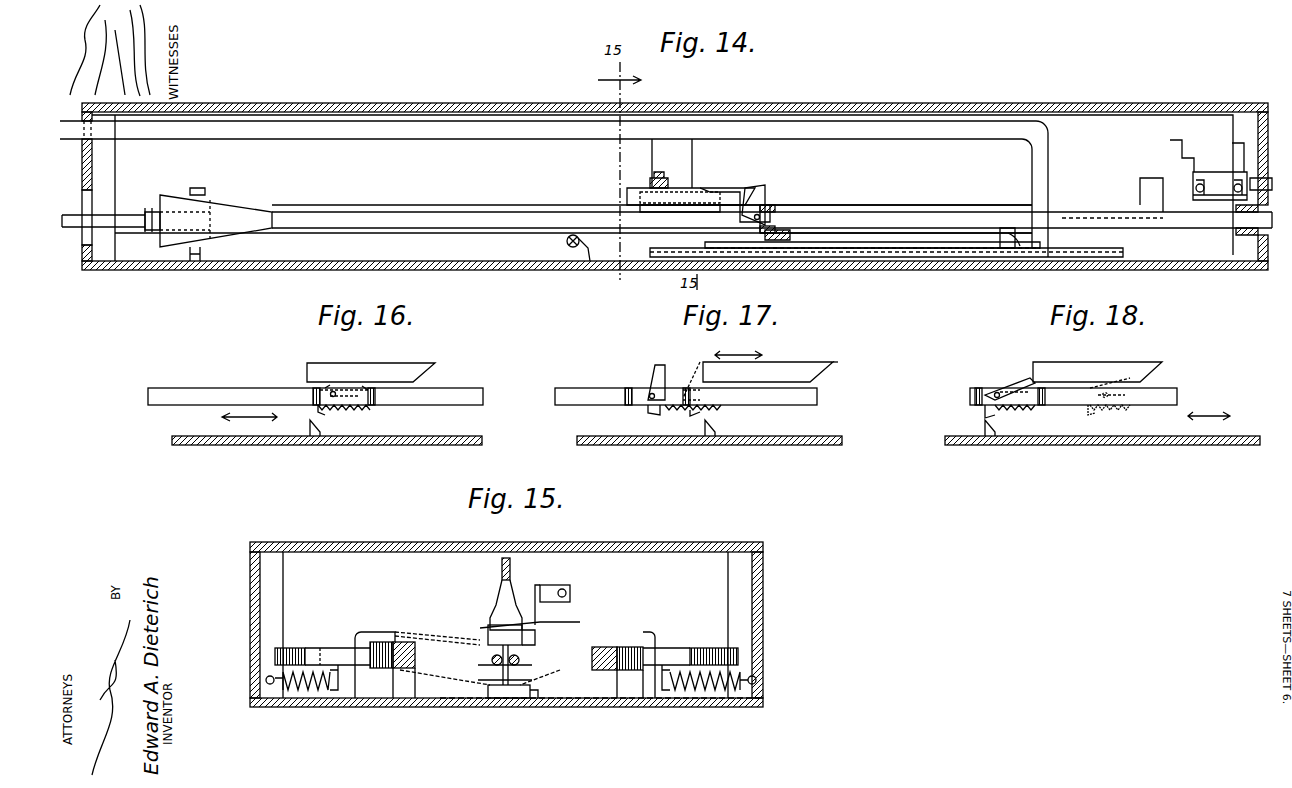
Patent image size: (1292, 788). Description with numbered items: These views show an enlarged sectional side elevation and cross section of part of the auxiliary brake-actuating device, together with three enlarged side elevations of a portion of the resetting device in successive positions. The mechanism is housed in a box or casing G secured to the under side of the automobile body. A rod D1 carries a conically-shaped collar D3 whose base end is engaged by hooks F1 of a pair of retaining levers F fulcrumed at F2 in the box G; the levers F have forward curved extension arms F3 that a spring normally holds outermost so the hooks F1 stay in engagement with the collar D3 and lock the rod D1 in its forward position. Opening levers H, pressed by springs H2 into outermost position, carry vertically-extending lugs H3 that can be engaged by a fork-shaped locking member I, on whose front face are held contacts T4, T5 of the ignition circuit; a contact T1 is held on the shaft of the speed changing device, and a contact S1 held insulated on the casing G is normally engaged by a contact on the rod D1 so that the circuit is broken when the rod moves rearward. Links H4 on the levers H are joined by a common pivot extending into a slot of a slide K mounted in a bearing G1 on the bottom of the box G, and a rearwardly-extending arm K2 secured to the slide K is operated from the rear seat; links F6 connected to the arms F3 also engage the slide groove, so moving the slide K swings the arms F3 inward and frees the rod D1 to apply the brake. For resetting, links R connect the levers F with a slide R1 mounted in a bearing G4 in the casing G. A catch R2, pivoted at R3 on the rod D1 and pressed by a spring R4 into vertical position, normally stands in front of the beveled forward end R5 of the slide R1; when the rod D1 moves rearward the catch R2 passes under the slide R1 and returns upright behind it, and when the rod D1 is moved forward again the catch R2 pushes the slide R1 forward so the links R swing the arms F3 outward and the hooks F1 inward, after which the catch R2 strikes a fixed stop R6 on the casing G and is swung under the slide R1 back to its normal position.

In FIG. 14, the box G is at (500, 110).
In FIG. 16, the box G is at (212, 445).
In FIG. 17, the box G is at (833, 445).
In FIG. 18, the box G is at (1100, 445).
In FIG. 15, the box G is at (250, 598).
In FIG. 14, the bearing G1 is at (1062, 257).
In FIG. 15, the bearing G1 is at (470, 698).
In FIG. 14, the bearing G4 is at (700, 205).
In FIG. 15, the bearing G4 is at (488, 632).
In FIG. 14, the slide K is at (928, 248).
In FIG. 15, the slide K is at (508, 698).
In FIG. 14, the arm K2 is at (508, 139).
In FIG. 15, the arm K2 is at (502, 568).
In FIG. 14, the rod D1 is at (72, 228).
In FIG. 16, the rod D1 is at (247, 388).
In FIG. 17, the rod D1 is at (577, 390).
In FIG. 18, the rod D1 is at (1177, 396).
In FIG. 15, the rod D1 is at (536, 698).
In FIG. 14, the conically-shaped collar D3 is at (238, 212).
In FIG. 14, the retaining lever F is at (495, 233).
In FIG. 14, the hook F1 is at (152, 208).
In FIG. 14, the fulcrum F2 is at (205, 194).
In FIG. 15, the extension arm F3 is at (605, 648).
In FIG. 15, the link F6 is at (470, 678).
In FIG. 14, the link R is at (676, 188).
In FIG. 15, the link R is at (405, 642).
In FIG. 14, the slide R1 is at (735, 195).
In FIG. 16, the slide R1 is at (412, 370).
In FIG. 17, the slide R1 is at (792, 372).
In FIG. 18, the slide R1 is at (1110, 372).
In FIG. 15, the slide R1 is at (480, 628).
In FIG. 14, the catch R2 is at (765, 200).
In FIG. 16, the catch R2 is at (350, 388).
In FIG. 17, the catch R2 is at (640, 382).
In FIG. 18, the catch R2 is at (1025, 382).
In FIG. 17, the pivot R3 is at (650, 408).
In FIG. 16, the spring R4 is at (358, 410).
In FIG. 17, the spring R4 is at (690, 412).
In FIG. 18, the spring R4 is at (1015, 412).
In FIG. 17, the beveled forward end R5 is at (833, 366).
In FIG. 14, the fixed stop R6 is at (588, 261).
In FIG. 16, the fixed stop R6 is at (313, 445).
In FIG. 17, the fixed stop R6 is at (712, 445).
In FIG. 18, the fixed stop R6 is at (988, 445).
In FIG. 14, the opening lever H is at (962, 205).
In FIG. 15, the opening lever H is at (310, 652).
In FIG. 15, the spring H2 is at (298, 690).
In FIG. 14, the lug H3 is at (1145, 192).
In FIG. 14, the link H4 is at (1003, 228).
In FIG. 14, the locking member I is at (1218, 175).
In FIG. 14, the contact T1 is at (1272, 180).
In FIG. 14, the contact T4 is at (1238, 146).
In FIG. 14, the contact T5 is at (1176, 146).
In FIG. 15, the contact S1 is at (548, 588).